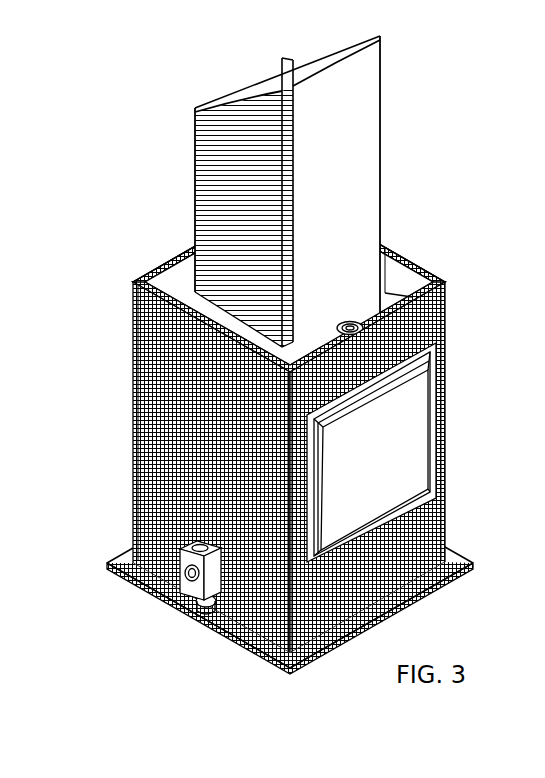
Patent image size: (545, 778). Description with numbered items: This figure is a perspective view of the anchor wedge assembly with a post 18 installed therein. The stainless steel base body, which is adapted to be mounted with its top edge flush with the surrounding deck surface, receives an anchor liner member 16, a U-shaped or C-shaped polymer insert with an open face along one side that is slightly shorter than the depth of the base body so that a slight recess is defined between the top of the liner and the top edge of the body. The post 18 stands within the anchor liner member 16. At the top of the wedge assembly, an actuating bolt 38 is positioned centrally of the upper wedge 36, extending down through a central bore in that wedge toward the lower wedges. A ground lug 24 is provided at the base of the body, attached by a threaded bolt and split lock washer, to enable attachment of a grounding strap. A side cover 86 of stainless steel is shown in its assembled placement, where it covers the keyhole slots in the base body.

The anchor liner member 16 is at (168, 285).
The post 18 is at (195, 200).
The ground lug 24 is at (184, 570).
The upper wedge 36 is at (388, 307).
The actuating bolt 38 is at (352, 326).
The side cover 86 is at (407, 435).